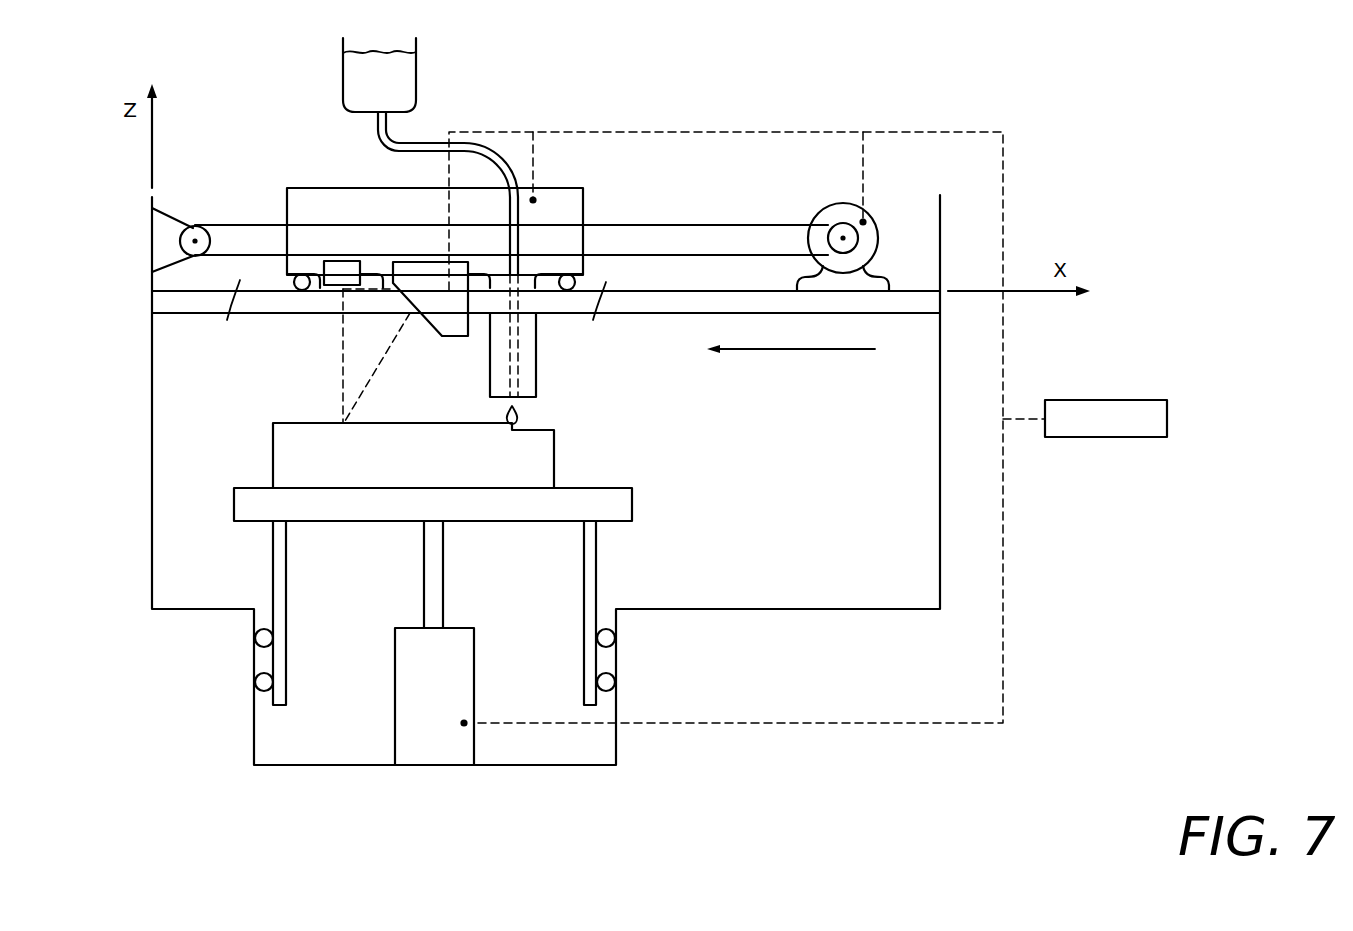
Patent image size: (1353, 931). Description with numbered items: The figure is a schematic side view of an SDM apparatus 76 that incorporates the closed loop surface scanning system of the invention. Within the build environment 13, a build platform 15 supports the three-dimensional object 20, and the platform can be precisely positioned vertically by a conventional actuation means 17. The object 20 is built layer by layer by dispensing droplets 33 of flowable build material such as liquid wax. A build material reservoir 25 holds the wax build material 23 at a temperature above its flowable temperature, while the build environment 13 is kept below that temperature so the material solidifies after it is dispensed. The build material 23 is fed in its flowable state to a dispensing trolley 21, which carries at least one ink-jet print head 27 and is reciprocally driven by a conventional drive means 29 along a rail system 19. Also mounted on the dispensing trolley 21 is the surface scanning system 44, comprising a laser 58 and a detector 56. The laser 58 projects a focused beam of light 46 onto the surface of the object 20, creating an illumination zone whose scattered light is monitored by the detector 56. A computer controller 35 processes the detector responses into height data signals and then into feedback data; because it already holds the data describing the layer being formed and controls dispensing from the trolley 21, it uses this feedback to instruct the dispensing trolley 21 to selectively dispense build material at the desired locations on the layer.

The build environment 13 is at (792, 349).
The build platform 15 is at (242, 535).
The actuation means 17 is at (412, 723).
The rail system 19 is at (920, 307).
The three-dimensional object 20 is at (535, 461).
The dispensing trolley 21 is at (320, 188).
The wax build material 23 is at (402, 78).
The build material reservoir 25 is at (343, 68).
The ink-jet print head 27 is at (518, 373).
The drive means 29 is at (833, 215).
The droplets 33 is at (523, 413).
The computer controller 35 is at (1107, 437).
The surface scanning system 44 is at (185, 357).
The focused beam of light 46 is at (342, 353).
The detector 56 is at (432, 262).
The laser 58 is at (332, 268).
The SDM apparatus 76 is at (1018, 60).